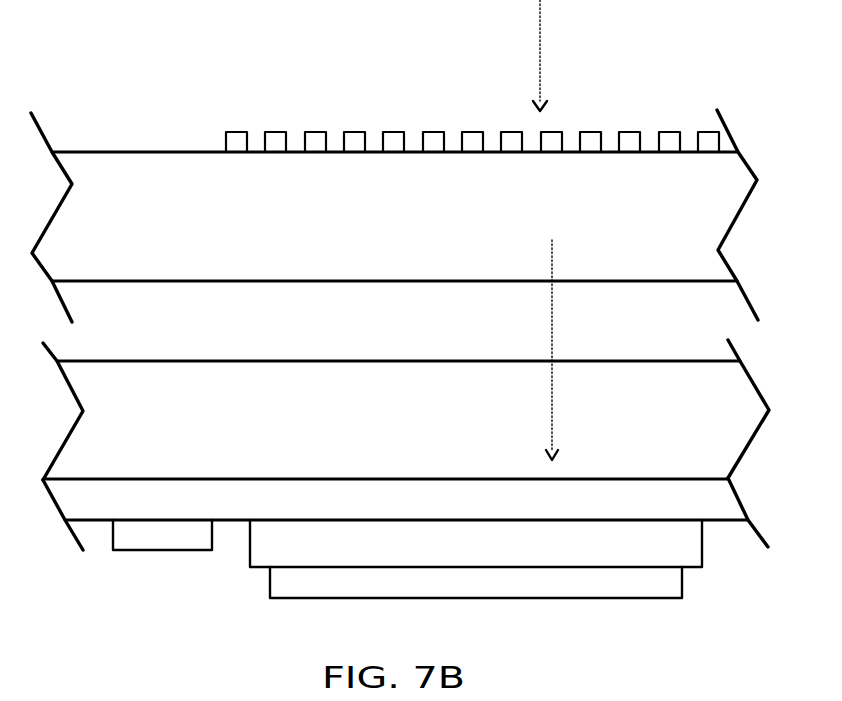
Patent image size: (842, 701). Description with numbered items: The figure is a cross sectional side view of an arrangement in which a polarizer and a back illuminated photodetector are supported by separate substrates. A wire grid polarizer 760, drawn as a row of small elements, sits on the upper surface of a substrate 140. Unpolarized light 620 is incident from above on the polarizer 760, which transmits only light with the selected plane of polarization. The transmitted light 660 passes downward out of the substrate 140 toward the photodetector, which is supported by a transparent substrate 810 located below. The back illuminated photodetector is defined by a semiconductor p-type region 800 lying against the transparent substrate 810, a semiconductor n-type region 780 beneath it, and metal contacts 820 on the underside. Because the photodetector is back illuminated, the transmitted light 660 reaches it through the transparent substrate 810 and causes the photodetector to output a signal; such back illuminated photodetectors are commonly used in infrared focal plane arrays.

The substrate 140 is at (394, 216).
The wire grid polarizer 760 is at (433, 147).
The unpolarized light 620 is at (569, 55).
The transmitted light 660 is at (582, 350).
The transparent substrate 810 is at (406, 410).
The semiconductor p-type region 800 is at (690, 498).
The semiconductor n-type region 780 is at (672, 547).
The metal contacts 820 is at (290, 589).